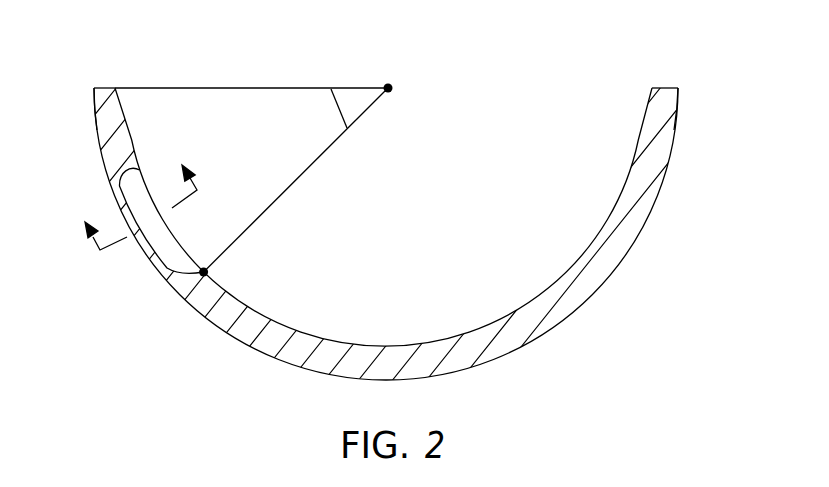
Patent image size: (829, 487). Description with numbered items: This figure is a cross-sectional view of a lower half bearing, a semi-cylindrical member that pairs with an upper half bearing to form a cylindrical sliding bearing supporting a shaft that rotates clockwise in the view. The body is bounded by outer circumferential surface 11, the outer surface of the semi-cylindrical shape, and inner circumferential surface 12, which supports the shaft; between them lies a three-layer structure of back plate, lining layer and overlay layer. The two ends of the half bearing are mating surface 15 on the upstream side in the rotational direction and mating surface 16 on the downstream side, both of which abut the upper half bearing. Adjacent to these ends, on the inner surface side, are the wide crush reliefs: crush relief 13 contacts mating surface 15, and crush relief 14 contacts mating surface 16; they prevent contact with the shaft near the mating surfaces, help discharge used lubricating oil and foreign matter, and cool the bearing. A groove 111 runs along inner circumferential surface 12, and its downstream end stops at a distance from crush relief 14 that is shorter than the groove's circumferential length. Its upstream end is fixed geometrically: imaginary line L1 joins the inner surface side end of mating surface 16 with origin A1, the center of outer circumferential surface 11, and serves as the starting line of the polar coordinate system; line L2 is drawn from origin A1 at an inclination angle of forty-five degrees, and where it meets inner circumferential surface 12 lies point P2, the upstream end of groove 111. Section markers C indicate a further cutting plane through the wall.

The outer circumferential surface 11 is at (607, 276).
The inner circumferential surface 12 is at (598, 232).
The crush relief 13 is at (648, 104).
The crush relief 14 is at (128, 97).
The mating surface 15 is at (669, 87).
The mating surface 16 is at (113, 86).
The groove 111 is at (182, 238).
The imaginary line L1 is at (270, 85).
The line L2 is at (311, 166).
The origin A1 is at (389, 86).
The point P2 is at (210, 271).
The section line C- C is at (132, 193).